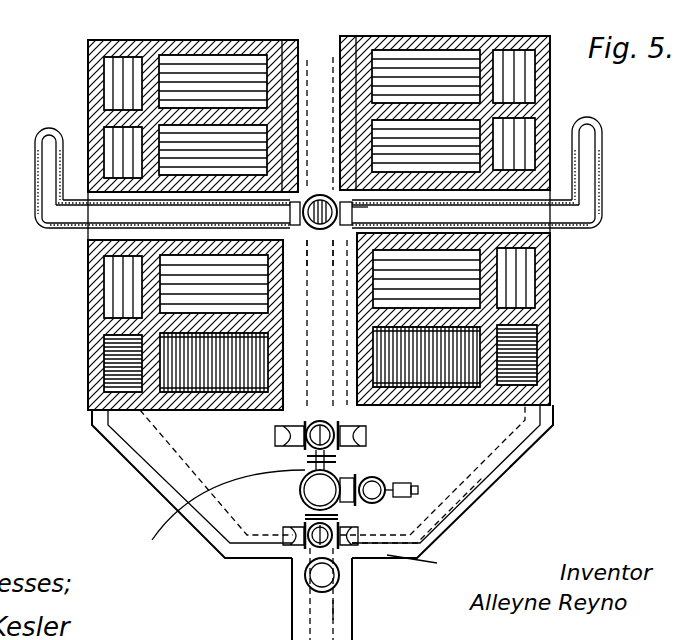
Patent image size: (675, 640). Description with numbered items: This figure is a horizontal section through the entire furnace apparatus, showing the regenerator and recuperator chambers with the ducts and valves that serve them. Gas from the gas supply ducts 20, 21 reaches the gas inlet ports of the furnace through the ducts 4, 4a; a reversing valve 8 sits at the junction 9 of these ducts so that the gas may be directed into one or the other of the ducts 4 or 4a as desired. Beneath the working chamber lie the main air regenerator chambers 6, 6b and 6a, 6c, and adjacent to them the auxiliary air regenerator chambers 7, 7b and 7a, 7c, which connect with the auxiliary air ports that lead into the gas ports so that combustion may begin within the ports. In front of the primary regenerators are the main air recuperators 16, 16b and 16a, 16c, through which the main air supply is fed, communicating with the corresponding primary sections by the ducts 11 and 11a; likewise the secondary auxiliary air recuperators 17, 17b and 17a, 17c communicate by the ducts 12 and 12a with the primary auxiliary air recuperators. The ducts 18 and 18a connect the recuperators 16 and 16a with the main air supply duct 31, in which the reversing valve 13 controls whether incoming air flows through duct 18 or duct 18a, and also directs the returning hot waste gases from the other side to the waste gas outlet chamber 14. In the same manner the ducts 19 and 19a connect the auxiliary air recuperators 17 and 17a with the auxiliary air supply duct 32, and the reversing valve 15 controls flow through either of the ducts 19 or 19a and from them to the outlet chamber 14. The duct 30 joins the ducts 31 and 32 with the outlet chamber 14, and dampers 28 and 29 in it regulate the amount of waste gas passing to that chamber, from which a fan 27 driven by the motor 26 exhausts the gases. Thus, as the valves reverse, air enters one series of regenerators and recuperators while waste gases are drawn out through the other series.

The duct 4 is at (36, 166).
The duct 4a is at (589, 163).
The main air regenerator chamber 6 is at (213, 150).
The main air regenerator chamber 6a is at (405, 138).
The main air regenerator chamber 6b is at (202, 68).
The main air regenerator chamber 6c is at (452, 68).
The auxiliary air regenerator chamber 7 is at (113, 147).
The auxiliary air regenerator chamber 7a is at (520, 143).
The auxiliary air regenerator chamber 7b is at (113, 76).
The auxiliary air regenerator chamber 7c is at (520, 73).
The reversing valve 8 is at (321, 201).
The junction 9 is at (363, 216).
The duct 11 is at (298, 255).
The duct 11a is at (348, 256).
The duct 12 is at (90, 240).
The duct 12a is at (555, 227).
The reversing valve 13 is at (300, 450).
The waste gas outlet chamber 14 is at (320, 494).
The reversing valve 15 is at (310, 553).
The main air recuperator 16 is at (190, 392).
The main air recuperator 16a is at (470, 388).
The main air recuperator 16b is at (250, 300).
The main air recuperator 16c is at (535, 300).
The secondary auxiliary air recuperator 17 is at (104, 360).
The secondary auxiliary air recuperator 17a is at (537, 342).
The secondary auxiliary air recuperator 17b is at (104, 283).
The secondary auxiliary air recuperator 17c is at (537, 263).
The duct 18 is at (275, 436).
The duct 18a is at (366, 436).
The duct 19 is at (152, 458).
The duct 19a is at (350, 522).
The gas supply duct 20 is at (342, 575).
The gas supply duct 21 is at (333, 614).
The motor 26 is at (420, 490).
The fan 27 is at (385, 478).
The damper 28 is at (345, 467).
The damper 29 is at (300, 530).
The duct 30 is at (307, 470).
The main air supply duct 31 is at (213, 518).
The duct 32 is at (429, 565).